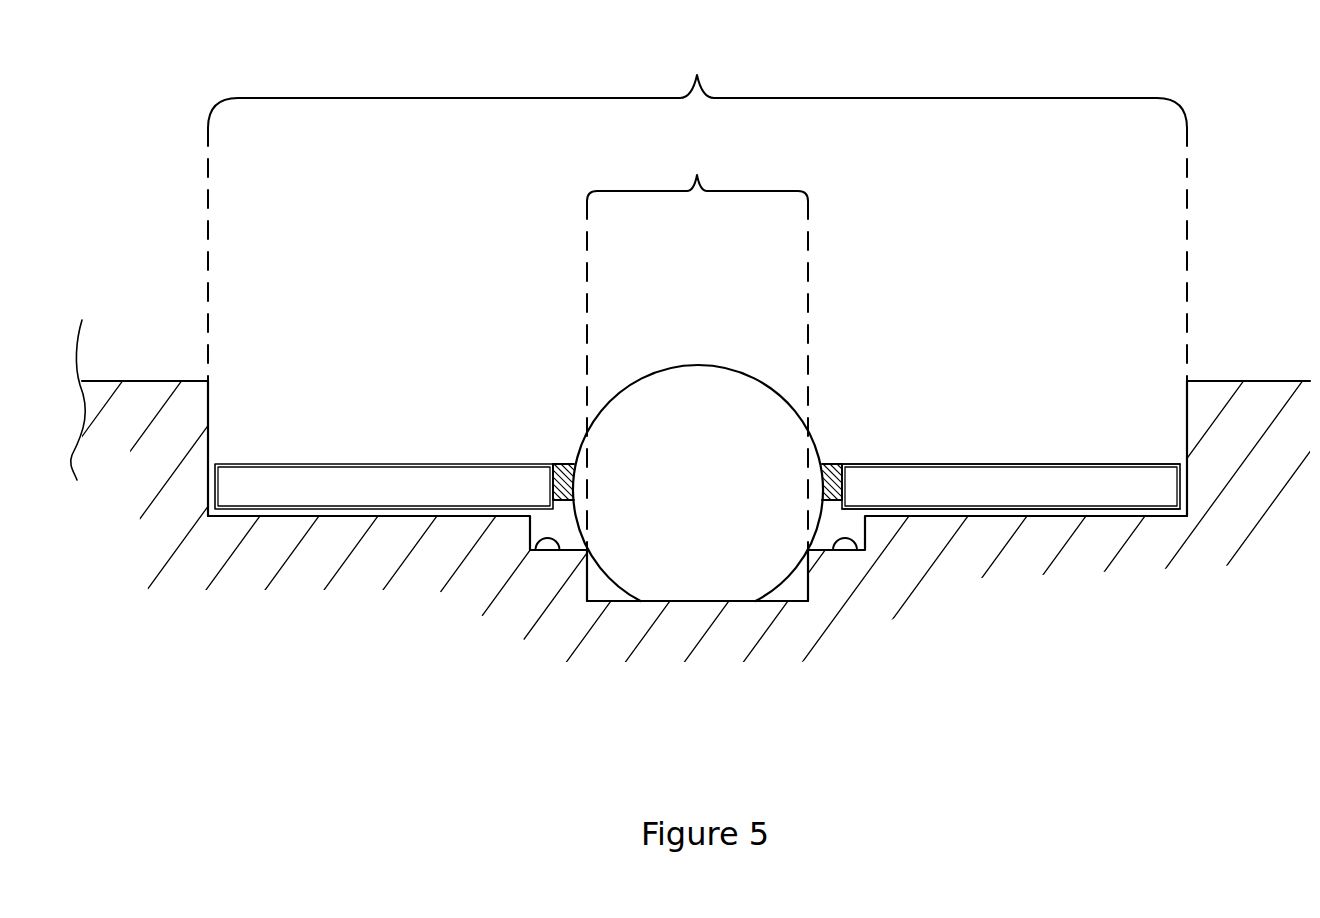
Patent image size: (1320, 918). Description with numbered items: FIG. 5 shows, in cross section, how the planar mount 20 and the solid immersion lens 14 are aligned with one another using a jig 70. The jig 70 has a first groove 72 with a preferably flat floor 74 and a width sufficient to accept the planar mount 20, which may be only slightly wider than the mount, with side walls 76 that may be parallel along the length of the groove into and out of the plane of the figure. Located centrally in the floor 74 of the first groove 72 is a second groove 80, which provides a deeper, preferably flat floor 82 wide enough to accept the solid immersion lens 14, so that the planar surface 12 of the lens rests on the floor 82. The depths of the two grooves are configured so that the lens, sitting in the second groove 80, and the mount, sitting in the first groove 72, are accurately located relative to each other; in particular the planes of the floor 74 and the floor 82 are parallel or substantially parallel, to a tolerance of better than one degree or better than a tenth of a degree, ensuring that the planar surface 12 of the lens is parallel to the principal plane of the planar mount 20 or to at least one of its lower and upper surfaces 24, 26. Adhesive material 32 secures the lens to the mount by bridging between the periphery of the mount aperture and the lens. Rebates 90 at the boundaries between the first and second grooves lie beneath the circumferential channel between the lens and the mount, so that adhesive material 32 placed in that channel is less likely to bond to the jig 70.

The planar surface 12 is at (712, 601).
The solid immersion lens 14 is at (765, 415).
The planar mount 20 is at (1023, 478).
The lower surface 24 is at (953, 465).
The upper surface 26 is at (938, 509).
The adhesive material 32 is at (838, 464).
The jig 70 is at (1043, 527).
The first groove 72 is at (697, 212).
The floor 74 is at (390, 518).
The side walls 76 is at (209, 415).
The second groove 80 is at (697, 348).
The floor 82 is at (618, 602).
The rebates 90 is at (560, 543).